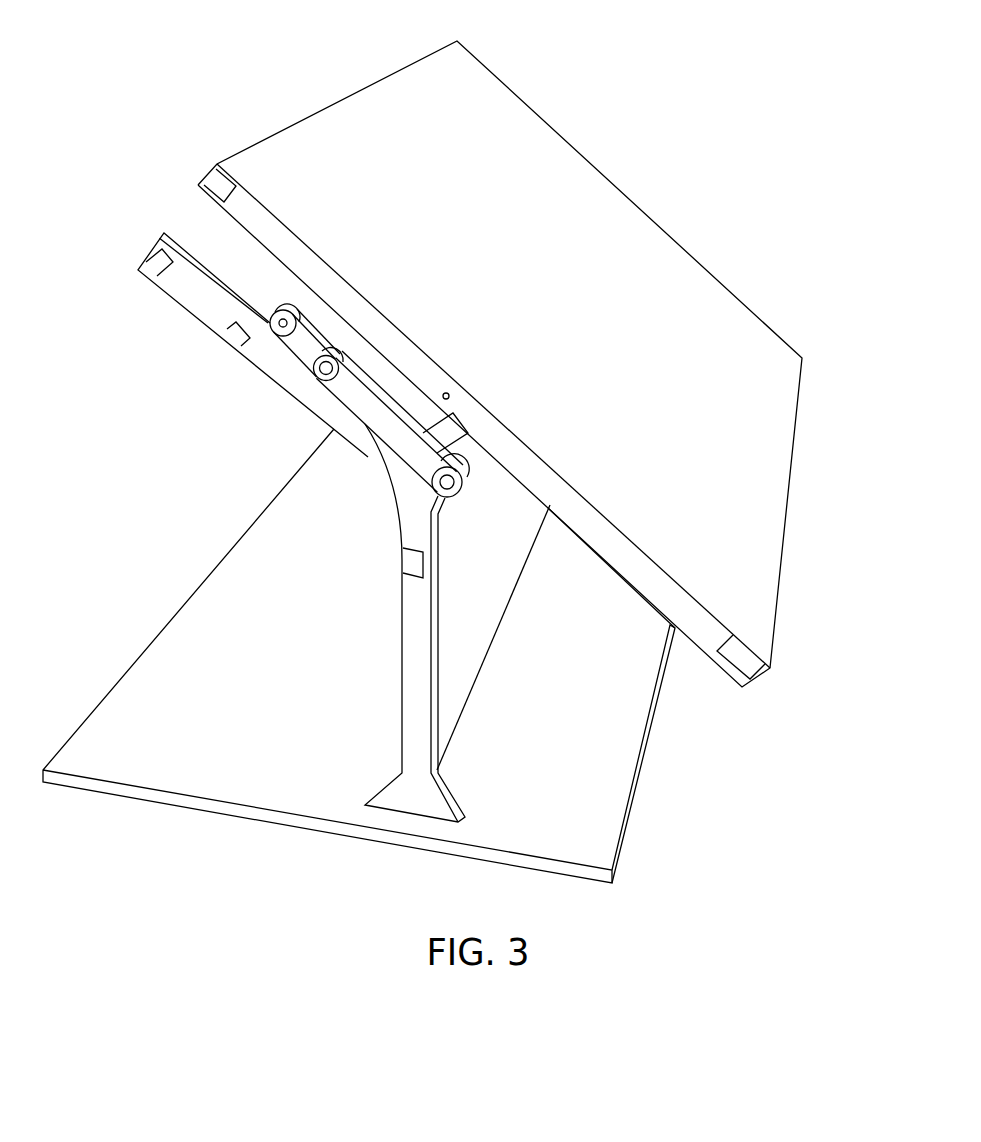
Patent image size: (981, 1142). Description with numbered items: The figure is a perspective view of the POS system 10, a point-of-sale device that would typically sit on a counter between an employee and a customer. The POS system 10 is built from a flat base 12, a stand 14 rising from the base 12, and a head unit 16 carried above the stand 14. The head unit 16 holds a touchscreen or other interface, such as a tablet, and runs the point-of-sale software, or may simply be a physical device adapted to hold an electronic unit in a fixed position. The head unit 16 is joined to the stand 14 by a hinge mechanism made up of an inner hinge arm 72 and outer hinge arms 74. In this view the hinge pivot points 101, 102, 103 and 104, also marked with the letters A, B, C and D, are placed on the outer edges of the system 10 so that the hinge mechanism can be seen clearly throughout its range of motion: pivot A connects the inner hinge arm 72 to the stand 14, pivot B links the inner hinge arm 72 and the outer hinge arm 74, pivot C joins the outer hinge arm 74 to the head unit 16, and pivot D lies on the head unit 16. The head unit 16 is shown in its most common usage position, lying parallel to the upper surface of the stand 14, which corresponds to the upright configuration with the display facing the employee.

The POS system 10 is at (219, 92).
The base 12 is at (123, 722).
The stand 14 is at (207, 297).
The head unit 16 is at (541, 159).
The inner hinge arm 72 is at (320, 320).
The outer hinge arm 74 is at (375, 424).
The hinge pivot point 101 is at (279, 328).
The hinge pivot point 102 is at (319, 383).
The hinge pivot point 103 is at (436, 488).
The hinge pivot point 104 is at (446, 393).
The hinge pivot point A is at (275, 354).
The hinge pivot point B is at (323, 399).
The hinge pivot point C is at (472, 453).
The hinge pivot point D is at (427, 379).